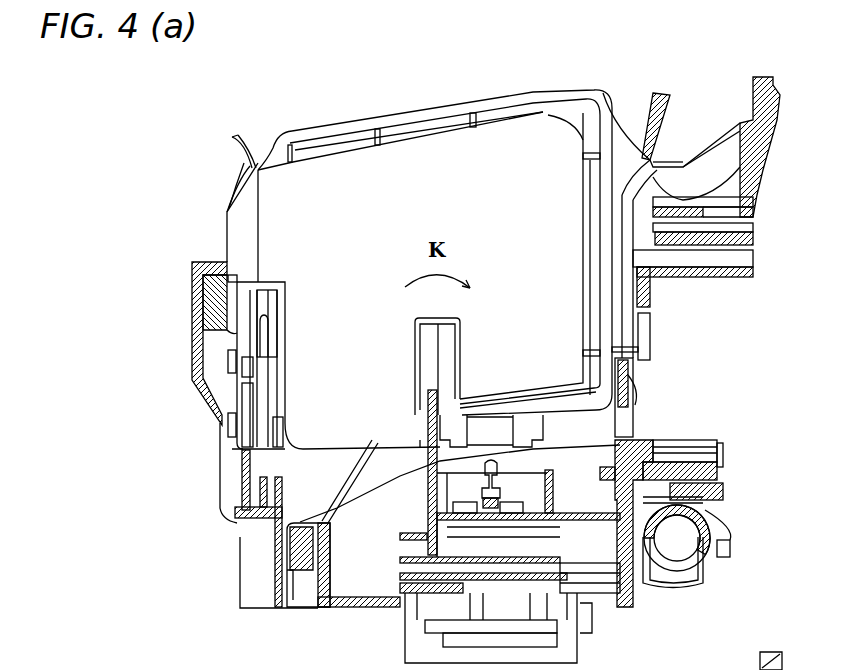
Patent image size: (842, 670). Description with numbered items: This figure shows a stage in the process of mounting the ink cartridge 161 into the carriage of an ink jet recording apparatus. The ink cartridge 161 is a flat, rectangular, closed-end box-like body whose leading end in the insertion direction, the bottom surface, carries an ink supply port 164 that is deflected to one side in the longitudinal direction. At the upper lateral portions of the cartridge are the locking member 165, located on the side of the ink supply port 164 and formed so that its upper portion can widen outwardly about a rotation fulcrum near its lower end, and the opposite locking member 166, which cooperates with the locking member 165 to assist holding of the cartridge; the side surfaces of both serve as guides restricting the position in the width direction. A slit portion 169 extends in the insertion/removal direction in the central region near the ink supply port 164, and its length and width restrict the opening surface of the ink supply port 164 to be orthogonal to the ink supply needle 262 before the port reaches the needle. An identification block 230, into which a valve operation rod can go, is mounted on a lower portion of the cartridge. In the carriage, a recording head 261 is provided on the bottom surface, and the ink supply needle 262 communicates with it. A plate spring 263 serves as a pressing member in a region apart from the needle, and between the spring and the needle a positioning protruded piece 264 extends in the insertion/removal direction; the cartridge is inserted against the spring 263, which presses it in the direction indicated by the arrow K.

The ink cartridge 161 is at (410, 97).
The locking member 165 is at (657, 97).
The locking member 166 is at (234, 140).
The identification block 230 is at (227, 337).
The slit portion 169 is at (425, 368).
The ink supply port 164 is at (636, 405).
The ink supply needle 262 is at (638, 430).
The plate spring 263 is at (240, 539).
The positioning protruded piece 264 is at (324, 608).
The recording head 261 is at (582, 652).